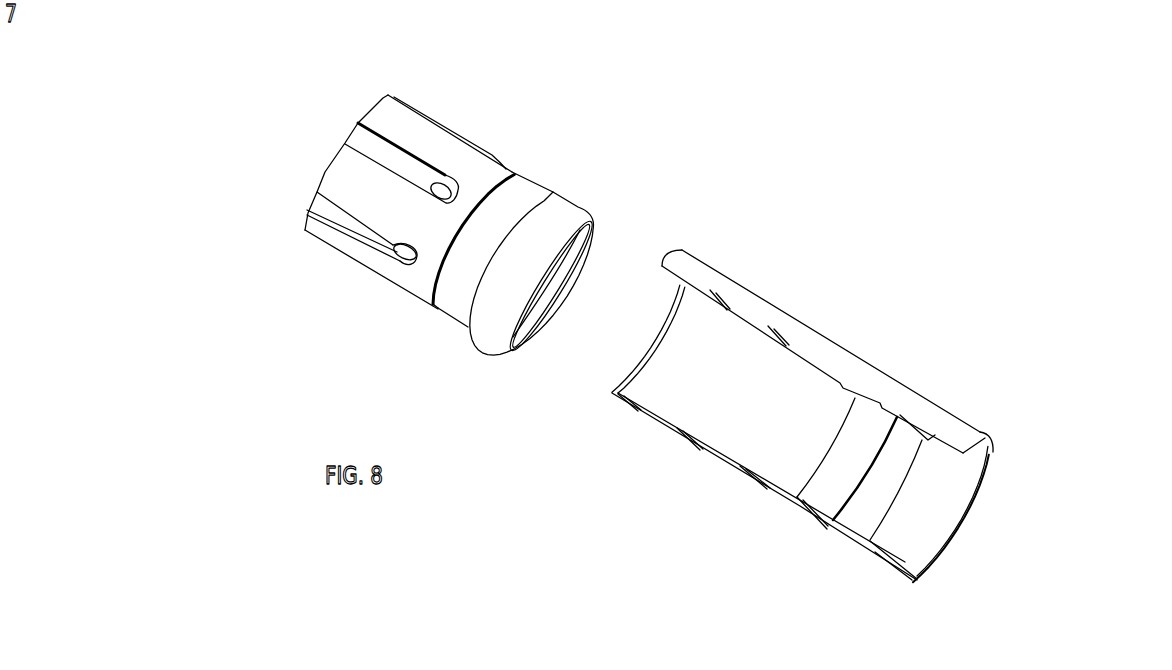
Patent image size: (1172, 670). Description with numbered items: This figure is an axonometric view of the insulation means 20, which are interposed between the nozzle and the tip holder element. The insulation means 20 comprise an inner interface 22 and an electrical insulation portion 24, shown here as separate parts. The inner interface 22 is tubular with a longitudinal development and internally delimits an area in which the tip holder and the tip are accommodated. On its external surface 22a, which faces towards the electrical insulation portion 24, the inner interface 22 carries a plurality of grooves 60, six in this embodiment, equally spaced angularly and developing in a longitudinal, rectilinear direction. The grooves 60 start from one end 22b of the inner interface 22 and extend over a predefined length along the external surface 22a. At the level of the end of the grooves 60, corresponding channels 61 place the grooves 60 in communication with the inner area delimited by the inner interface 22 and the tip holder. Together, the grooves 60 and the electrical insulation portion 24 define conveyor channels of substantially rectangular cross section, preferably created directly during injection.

The insulation means 20 is at (1015, 204).
The inner interface 22 is at (167, 239).
The external surface 22a is at (414, 114).
The end of the inner interface 22b is at (310, 163).
The electrical insulation portion 24 is at (1060, 408).
The grooves 60 is at (358, 140).
The channels 61 is at (445, 190).